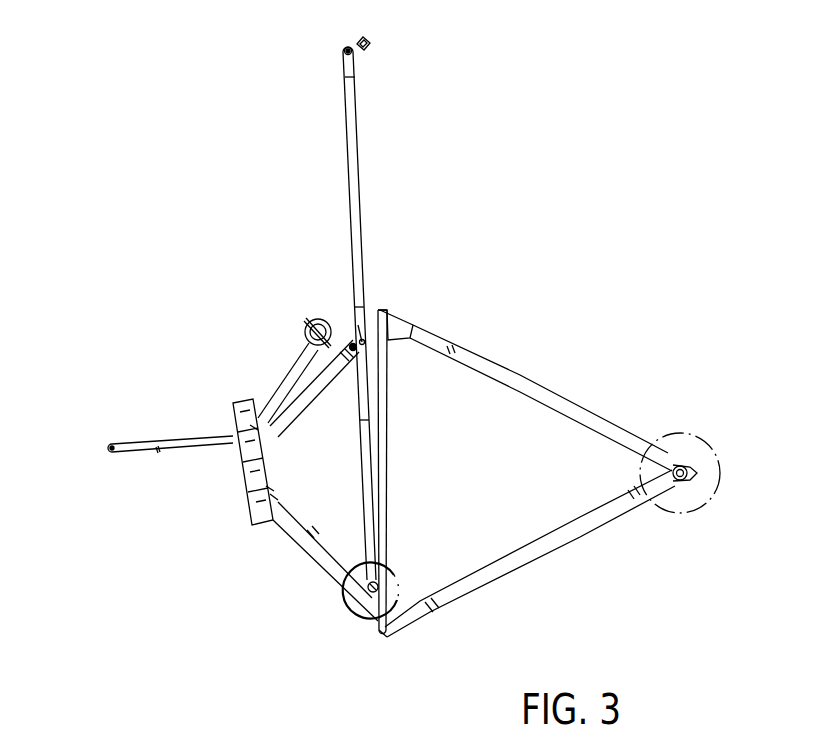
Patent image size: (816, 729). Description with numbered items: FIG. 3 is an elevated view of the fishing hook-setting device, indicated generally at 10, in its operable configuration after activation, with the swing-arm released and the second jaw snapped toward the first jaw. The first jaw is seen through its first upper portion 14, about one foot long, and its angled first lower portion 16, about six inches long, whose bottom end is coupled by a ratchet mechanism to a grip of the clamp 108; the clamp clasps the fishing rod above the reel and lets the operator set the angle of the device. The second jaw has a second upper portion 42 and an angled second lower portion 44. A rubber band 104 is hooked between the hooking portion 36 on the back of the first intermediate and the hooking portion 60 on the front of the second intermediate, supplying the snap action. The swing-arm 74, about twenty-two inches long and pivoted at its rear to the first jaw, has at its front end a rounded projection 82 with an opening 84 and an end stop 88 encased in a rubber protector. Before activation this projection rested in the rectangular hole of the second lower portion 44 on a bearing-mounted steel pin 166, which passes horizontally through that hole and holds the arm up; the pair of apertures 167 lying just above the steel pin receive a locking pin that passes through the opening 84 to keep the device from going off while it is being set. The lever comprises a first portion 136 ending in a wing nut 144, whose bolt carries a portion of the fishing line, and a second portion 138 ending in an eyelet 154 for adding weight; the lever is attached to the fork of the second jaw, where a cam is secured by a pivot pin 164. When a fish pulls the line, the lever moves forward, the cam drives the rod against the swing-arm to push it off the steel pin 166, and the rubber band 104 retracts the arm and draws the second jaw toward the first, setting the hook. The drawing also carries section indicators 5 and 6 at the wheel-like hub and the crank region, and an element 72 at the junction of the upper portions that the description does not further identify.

The section line 5 (wheel) 5 is at (672, 432).
The section line 6 (crank) 6 is at (340, 595).
The vehicle frame assembly 10 is at (510, 310).
The first upper portion 14 is at (510, 577).
The first lower portion 16 is at (300, 528).
The hooking portion 36 is at (380, 633).
The second upper portion 42 is at (500, 366).
The second lower portion 44 is at (305, 406).
The hooking portion 60 is at (383, 309).
The axle bolt 72 is at (668, 471).
The swing-arm 74 is at (349, 201).
The rounded projection 82 is at (357, 54).
The opening 84 is at (343, 51).
The end stop 88 is at (369, 41).
The rubber band 104 is at (389, 441).
The clamp 108 is at (252, 479).
The first portion 136 is at (287, 368).
The second portion 138 is at (197, 437).
The wing nut 144 is at (312, 325).
The eyelet 154 is at (106, 447).
The pivot pin 164 is at (98, 728).
The steel pin 166 is at (357, 347).
The apertures 167 is at (361, 338).